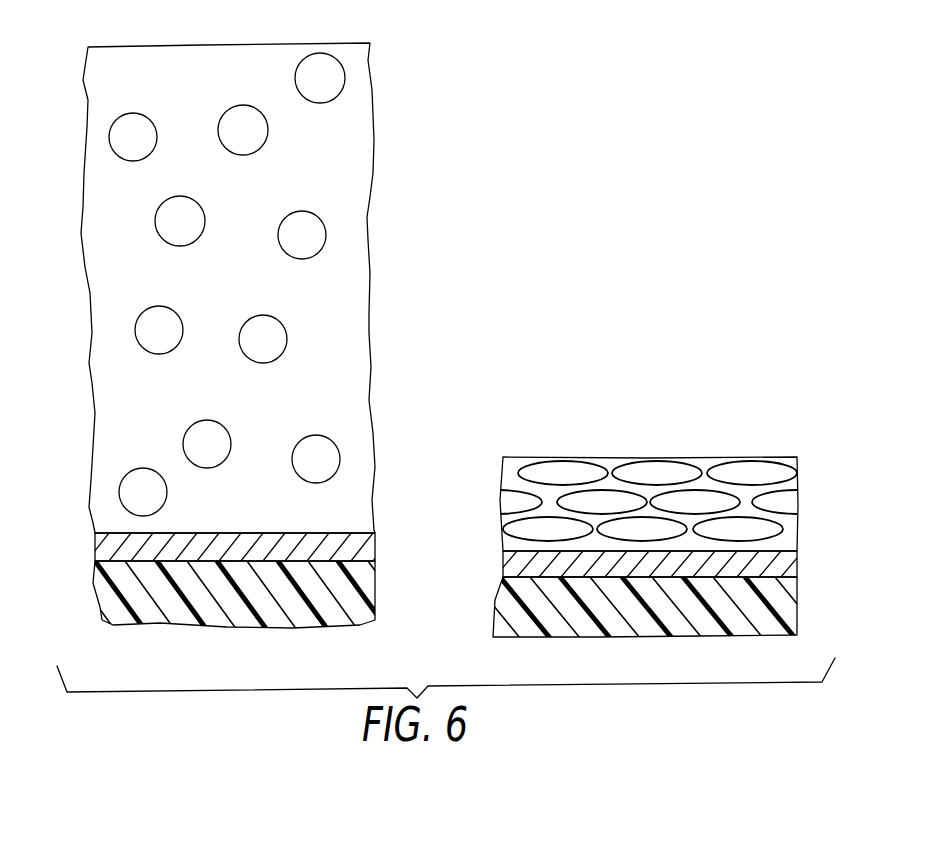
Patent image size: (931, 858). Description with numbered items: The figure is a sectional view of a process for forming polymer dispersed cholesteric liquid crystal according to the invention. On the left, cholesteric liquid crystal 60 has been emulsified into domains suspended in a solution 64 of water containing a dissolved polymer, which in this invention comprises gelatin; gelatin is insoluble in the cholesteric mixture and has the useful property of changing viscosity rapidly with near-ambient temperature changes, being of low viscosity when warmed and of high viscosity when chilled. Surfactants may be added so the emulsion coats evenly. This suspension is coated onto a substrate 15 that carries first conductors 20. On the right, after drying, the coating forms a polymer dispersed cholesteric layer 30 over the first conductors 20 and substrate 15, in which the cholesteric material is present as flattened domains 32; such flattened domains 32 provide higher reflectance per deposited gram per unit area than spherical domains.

The substrate 15 is at (118, 602).
The first conductors 20 is at (107, 543).
The polymer dispersed cholesteric layer 30 is at (643, 476).
The domains 32 is at (760, 472).
The cholesteric liquid crystal 60 is at (312, 230).
The solution 64 is at (235, 288).